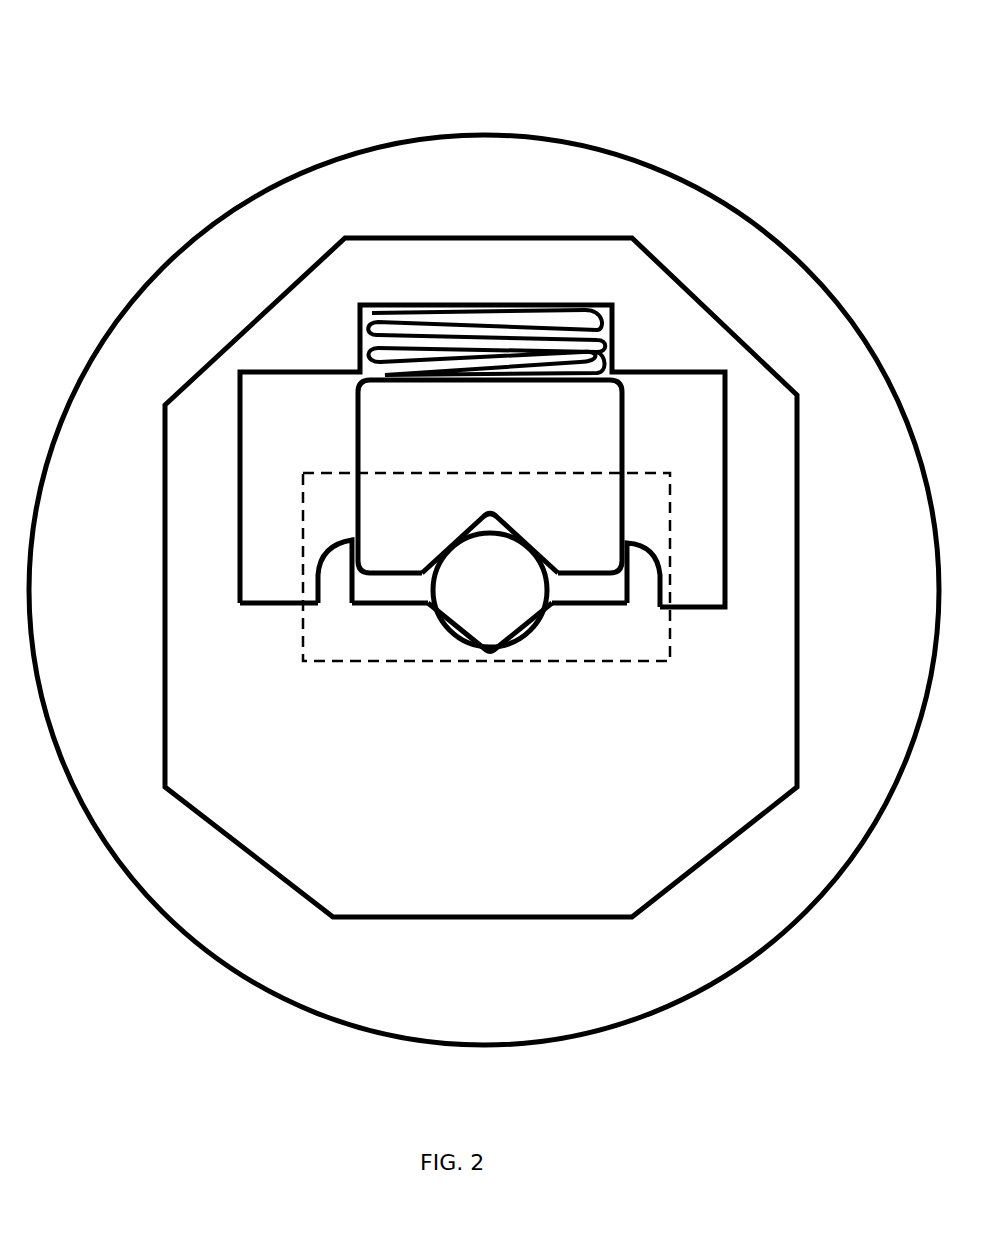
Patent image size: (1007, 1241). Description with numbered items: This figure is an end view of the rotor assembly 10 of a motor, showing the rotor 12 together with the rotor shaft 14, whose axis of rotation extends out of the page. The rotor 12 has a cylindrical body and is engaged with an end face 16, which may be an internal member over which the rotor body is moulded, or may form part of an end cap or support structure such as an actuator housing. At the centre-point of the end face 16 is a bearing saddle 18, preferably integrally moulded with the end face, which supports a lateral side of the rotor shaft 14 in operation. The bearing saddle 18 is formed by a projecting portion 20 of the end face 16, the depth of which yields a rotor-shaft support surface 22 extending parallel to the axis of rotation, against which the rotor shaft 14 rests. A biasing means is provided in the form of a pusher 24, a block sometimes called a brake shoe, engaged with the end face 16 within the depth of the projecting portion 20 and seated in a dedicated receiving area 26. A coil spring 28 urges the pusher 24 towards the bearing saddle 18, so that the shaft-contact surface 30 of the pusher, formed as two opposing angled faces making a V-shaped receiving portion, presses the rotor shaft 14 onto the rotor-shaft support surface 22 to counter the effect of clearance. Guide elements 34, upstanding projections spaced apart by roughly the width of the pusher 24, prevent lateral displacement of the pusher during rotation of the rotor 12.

The rotor assembly 10 is at (146, 125).
The rotor 12 is at (770, 207).
The rotor shaft 14 is at (510, 617).
The end face 16 is at (745, 795).
The bearing saddle 18 is at (563, 620).
The projecting portion 20 is at (340, 805).
The rotor-shaft support surface 22 is at (440, 625).
The pusher 24 is at (358, 408).
The receiving area 26 is at (660, 433).
The coil spring 28 is at (482, 305).
The shaft-contact surface 30 is at (455, 530).
The guide elements 34 is at (318, 572).